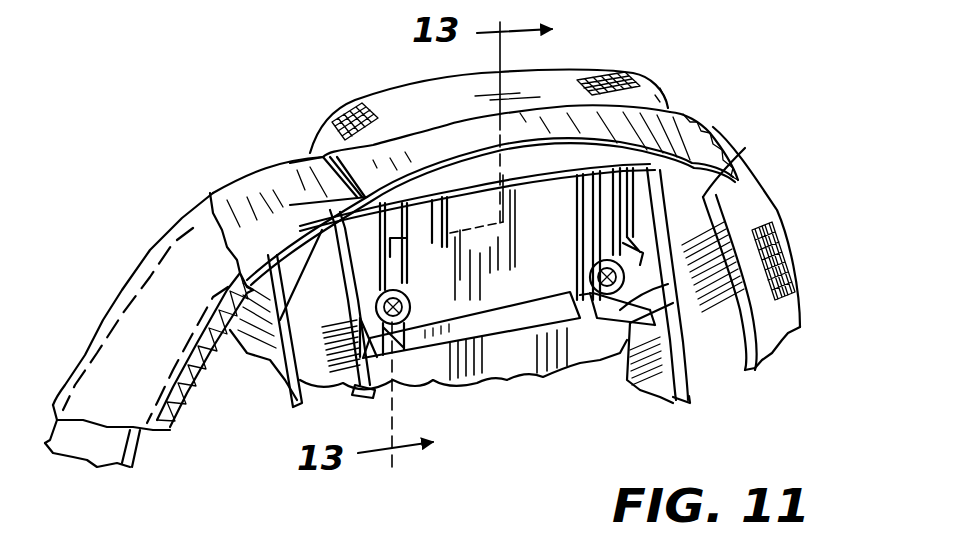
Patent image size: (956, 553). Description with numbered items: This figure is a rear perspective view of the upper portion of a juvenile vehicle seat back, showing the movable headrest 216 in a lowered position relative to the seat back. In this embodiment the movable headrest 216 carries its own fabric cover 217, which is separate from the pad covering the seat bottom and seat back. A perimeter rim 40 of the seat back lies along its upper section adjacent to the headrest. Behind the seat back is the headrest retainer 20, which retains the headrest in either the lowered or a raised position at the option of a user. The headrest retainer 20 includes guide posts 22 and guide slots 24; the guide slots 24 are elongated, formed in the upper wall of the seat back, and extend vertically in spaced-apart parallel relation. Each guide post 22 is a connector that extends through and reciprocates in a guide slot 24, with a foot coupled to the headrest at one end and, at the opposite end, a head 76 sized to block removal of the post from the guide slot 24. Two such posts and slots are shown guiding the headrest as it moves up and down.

The headrest retainer 20 is at (567, 300).
The guide posts 22 is at (407, 317).
The guide slots 24 is at (397, 257).
The perimeter rim 40 is at (293, 180).
The head 76 is at (580, 267).
The movable headrest 216 is at (667, 75).
The fabric cover 217 is at (413, 97).